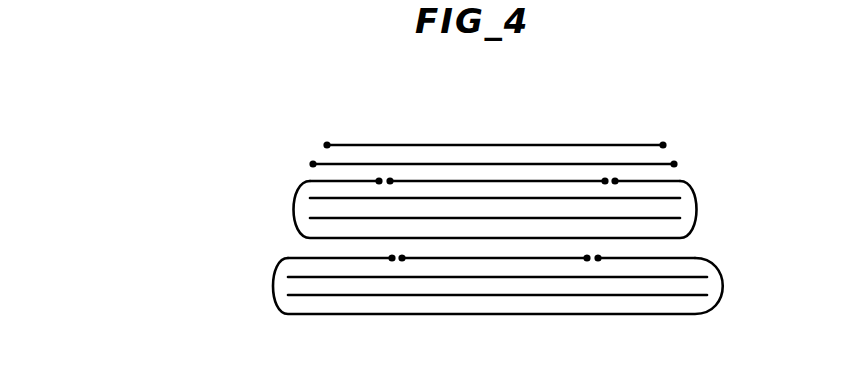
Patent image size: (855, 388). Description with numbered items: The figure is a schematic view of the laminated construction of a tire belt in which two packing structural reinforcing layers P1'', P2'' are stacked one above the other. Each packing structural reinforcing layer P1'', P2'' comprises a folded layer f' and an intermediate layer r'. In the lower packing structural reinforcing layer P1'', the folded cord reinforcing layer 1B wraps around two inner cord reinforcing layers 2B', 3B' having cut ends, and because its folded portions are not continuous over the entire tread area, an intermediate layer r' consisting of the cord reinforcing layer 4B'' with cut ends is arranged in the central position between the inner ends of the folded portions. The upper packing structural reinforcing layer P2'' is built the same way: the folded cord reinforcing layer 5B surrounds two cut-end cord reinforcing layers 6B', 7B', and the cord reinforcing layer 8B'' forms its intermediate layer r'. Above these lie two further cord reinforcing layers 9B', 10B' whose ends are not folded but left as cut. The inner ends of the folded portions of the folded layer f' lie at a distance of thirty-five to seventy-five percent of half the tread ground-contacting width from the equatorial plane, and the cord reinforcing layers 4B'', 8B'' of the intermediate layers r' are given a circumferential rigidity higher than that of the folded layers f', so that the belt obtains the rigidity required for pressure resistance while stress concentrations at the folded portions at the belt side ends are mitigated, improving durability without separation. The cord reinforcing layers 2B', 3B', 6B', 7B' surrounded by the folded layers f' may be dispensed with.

The cord reinforcing layer 1B is at (677, 314).
The cord reinforcing layer 2B' is at (497, 327).
The cord reinforcing layer 3B' is at (497, 318).
The cord reinforcing layer 4B'' is at (491, 306).
The cord reinforcing layer 5B is at (652, 237).
The cord reinforcing layer 6B' is at (525, 204).
The cord reinforcing layer 7B' is at (525, 178).
The cord reinforcing layer 8B'' is at (496, 132).
The cord reinforcing layer 9B' is at (493, 124).
The cord reinforcing layer 10B' is at (494, 114).
The packing structural reinforcing layer P1'' is at (469, 306).
The packing structural reinforcing layer P2'' is at (484, 159).
The folded layer f' is at (379, 177).
The intermediate layer r' is at (492, 177).